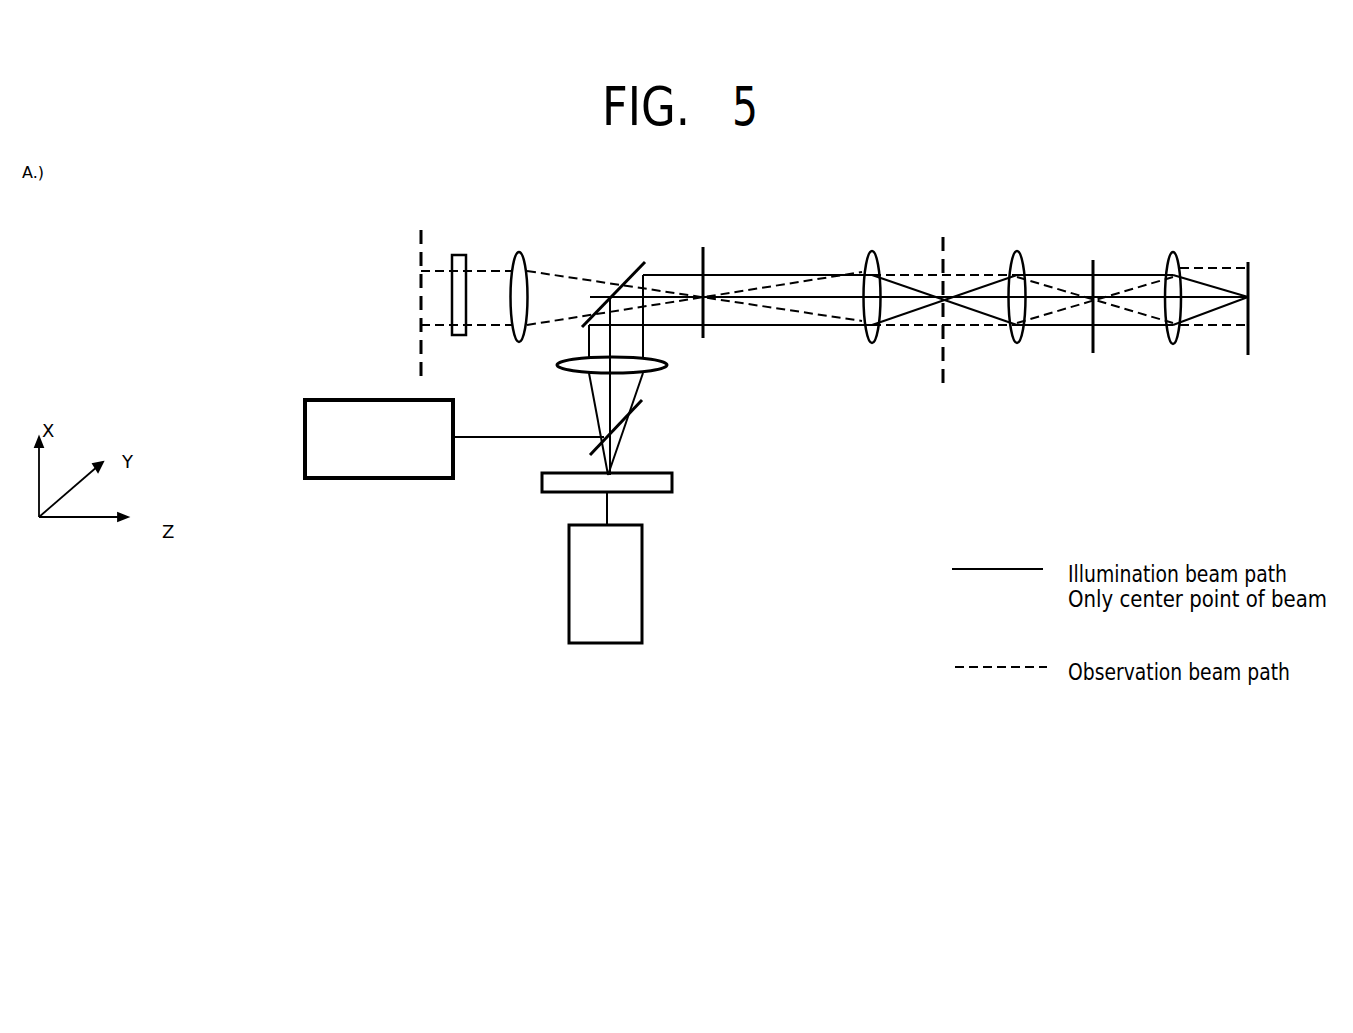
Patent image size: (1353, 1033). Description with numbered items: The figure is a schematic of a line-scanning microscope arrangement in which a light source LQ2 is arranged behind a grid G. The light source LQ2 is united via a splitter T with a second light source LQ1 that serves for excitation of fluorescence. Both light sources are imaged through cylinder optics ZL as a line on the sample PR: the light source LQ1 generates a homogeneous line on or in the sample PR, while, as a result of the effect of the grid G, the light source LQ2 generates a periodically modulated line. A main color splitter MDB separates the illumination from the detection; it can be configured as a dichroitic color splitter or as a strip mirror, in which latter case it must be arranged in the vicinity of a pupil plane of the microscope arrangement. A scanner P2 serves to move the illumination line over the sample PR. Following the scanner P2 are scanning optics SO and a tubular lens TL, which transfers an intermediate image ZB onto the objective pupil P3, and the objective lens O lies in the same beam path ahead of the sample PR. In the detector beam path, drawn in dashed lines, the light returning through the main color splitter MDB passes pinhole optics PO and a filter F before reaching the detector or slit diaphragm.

The filter F is at (459, 280).
The pinhole optics PO is at (522, 269).
The main color splitter MDB is at (613, 262).
The scanner P2 is at (705, 267).
The scanning optics SO is at (870, 271).
The intermediate image ZB is at (941, 293).
The tubular lens TL is at (1020, 271).
The objective pupil P3 is at (1093, 276).
The objective lens O is at (1173, 272).
The sample PR is at (1249, 278).
The cylinder optics ZL is at (636, 375).
The splitter T is at (641, 427).
The grid G is at (620, 483).
The light source LQ1 is at (379, 457).
The light source LQ2 is at (628, 584).